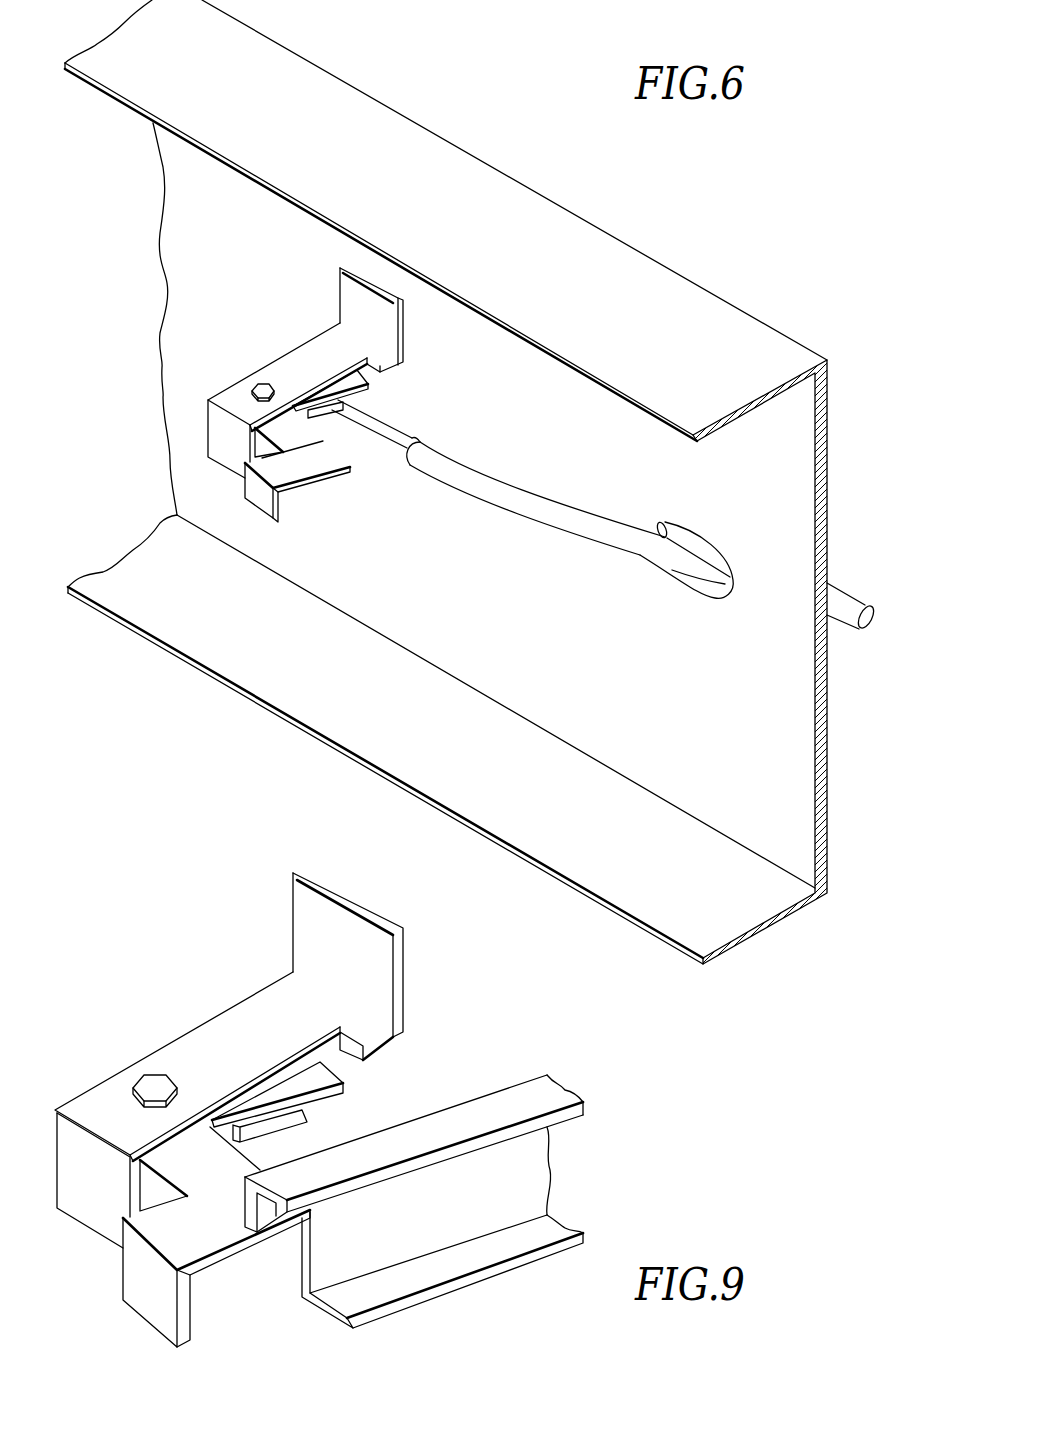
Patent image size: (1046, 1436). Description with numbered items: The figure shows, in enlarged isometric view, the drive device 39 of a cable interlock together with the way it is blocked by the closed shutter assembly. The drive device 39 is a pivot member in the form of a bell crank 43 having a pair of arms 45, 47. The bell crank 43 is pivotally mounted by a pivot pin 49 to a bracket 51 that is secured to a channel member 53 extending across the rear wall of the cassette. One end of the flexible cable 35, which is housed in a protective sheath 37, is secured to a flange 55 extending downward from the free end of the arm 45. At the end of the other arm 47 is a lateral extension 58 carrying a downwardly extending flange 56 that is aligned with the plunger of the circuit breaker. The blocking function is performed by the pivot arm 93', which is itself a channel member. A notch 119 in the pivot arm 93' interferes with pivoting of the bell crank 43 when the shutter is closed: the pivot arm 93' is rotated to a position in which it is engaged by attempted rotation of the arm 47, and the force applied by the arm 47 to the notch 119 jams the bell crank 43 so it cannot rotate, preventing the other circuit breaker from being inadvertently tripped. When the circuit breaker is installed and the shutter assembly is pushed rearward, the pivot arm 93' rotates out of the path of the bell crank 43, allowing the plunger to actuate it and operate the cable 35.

In FIG. 6, the flexible cable 35 is at (390, 433).
In FIG. 6, the protective sheath 37 is at (843, 602).
In FIG. 6, the drive device 39 is at (240, 312).
In FIG. 9, the drive device 39 is at (158, 1030).
In FIG. 6, the bell crank 43 is at (352, 502).
In FIG. 6, the arm 45 is at (347, 380).
In FIG. 9, the arm 45 is at (322, 1080).
In FIG. 6, the arm 47 is at (280, 427).
In FIG. 9, the arm 47 is at (173, 1165).
In FIG. 6, the pivot pin 49 is at (258, 380).
In FIG. 9, the pivot pin 49 is at (145, 1082).
In FIG. 6, the bracket 51 is at (347, 293).
In FIG. 9, the bracket 51 is at (255, 1010).
In FIG. 6, the channel member 53 is at (800, 748).
In FIG. 6, the flange 55 is at (320, 412).
In FIG. 9, the flange 55 is at (293, 1118).
In FIG. 6, the downwardly extending flange 56 is at (260, 502).
In FIG. 9, the downwardly extending flange 56 is at (148, 1300).
In FIG. 6, the lateral extension 58 is at (287, 473).
In FIG. 9, the lateral extension 58 is at (163, 1233).
In FIG. 9, the pivot arm 93' is at (429, 1192).
In FIG. 9, the notch 119 is at (308, 1268).